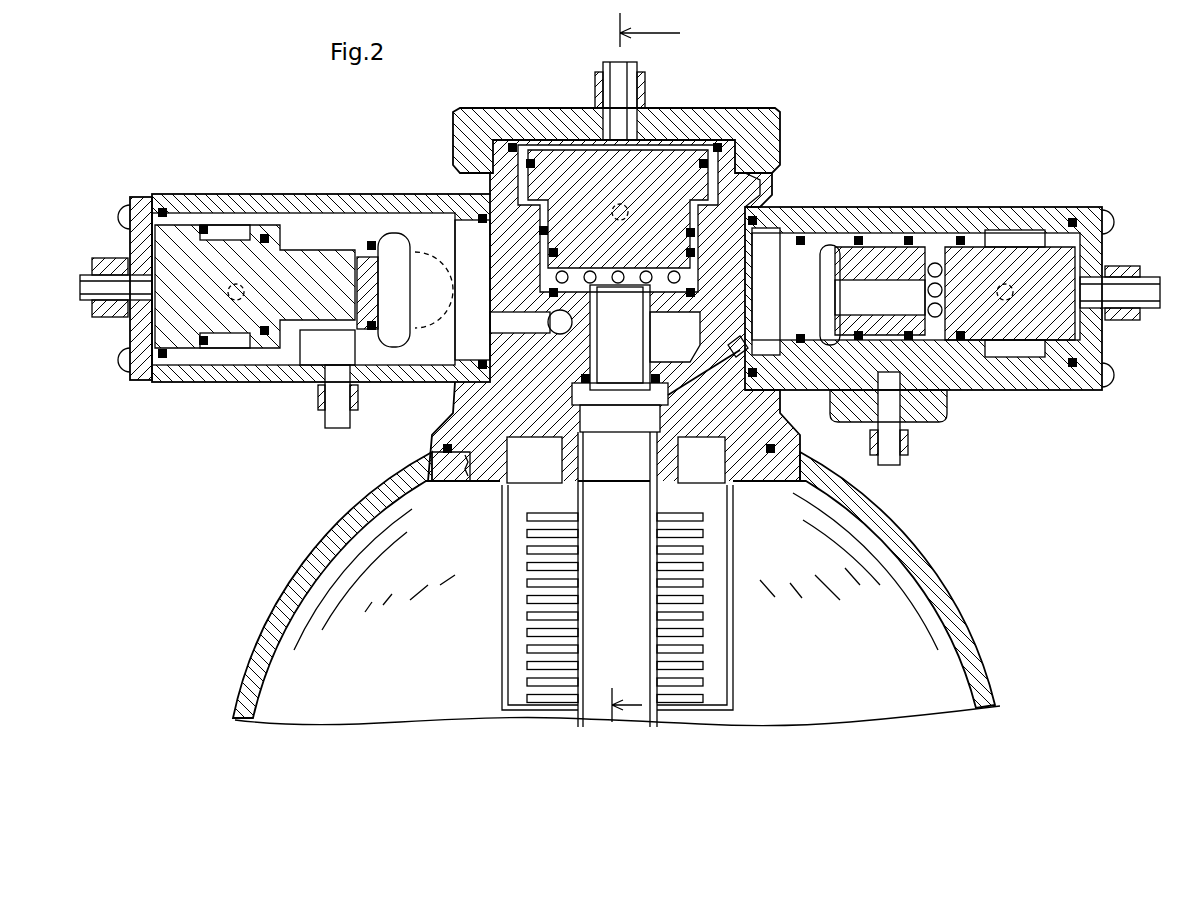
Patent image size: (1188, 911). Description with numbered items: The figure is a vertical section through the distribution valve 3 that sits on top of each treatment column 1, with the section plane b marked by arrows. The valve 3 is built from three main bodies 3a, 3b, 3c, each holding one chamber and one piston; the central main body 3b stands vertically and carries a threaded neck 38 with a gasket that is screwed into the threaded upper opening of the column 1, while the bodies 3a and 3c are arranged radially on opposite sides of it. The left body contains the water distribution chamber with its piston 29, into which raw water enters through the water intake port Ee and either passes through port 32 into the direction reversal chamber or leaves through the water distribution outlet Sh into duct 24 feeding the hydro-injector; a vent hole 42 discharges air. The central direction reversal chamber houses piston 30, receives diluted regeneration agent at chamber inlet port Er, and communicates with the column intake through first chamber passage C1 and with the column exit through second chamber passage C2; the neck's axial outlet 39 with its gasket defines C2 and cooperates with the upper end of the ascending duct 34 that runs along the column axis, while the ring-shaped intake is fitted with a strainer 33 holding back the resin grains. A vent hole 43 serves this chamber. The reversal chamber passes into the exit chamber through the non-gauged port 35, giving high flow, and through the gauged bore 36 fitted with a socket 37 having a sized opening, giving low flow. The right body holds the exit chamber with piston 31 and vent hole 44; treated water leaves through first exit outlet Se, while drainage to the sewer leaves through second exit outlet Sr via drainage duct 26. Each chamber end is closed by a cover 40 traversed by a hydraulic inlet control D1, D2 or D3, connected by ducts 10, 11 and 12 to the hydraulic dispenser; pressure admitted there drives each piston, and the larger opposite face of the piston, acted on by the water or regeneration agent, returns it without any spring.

The column 1 is at (312, 565).
The distribution valve 3 is at (795, 160).
The main body 3a is at (310, 205).
The central main body 3b is at (778, 195).
The main body 3c is at (950, 207).
The duct 10 is at (95, 300).
The duct 11 is at (637, 70).
The duct 12 is at (1148, 308).
The duct 24 is at (345, 428).
The drainage duct 26 is at (900, 462).
The piston 29 is at (235, 262).
The piston 30 is at (666, 188).
The piston 31 is at (985, 295).
The port 32 is at (528, 318).
The strainer 33 is at (502, 617).
The ascending duct 34 is at (622, 607).
The port 35 is at (740, 270).
The bore 36 is at (700, 380).
The socket 37 is at (732, 355).
The threaded neck 38 is at (505, 485).
The outlet 39 is at (725, 462).
The cover 40 is at (165, 197).
The vent hole 42 is at (246, 290).
The vent hole 43 is at (624, 214).
The vent hole 44 is at (1010, 296).
The water intake port Ee is at (398, 310).
The chamber inlet port Er is at (685, 330).
The first exit outlet Se is at (820, 298).
The water distribution outlet Sh is at (318, 385).
The second exit outlet Sr is at (905, 420).
The first chamber passage C1 is at (545, 437).
The second chamber passage C2 is at (636, 437).
The hydraulic inlet control D1 is at (127, 270).
The hydraulic inlet control D2 is at (603, 110).
The hydraulic inlet control D3 is at (1120, 292).
The section line b is at (646, 367).